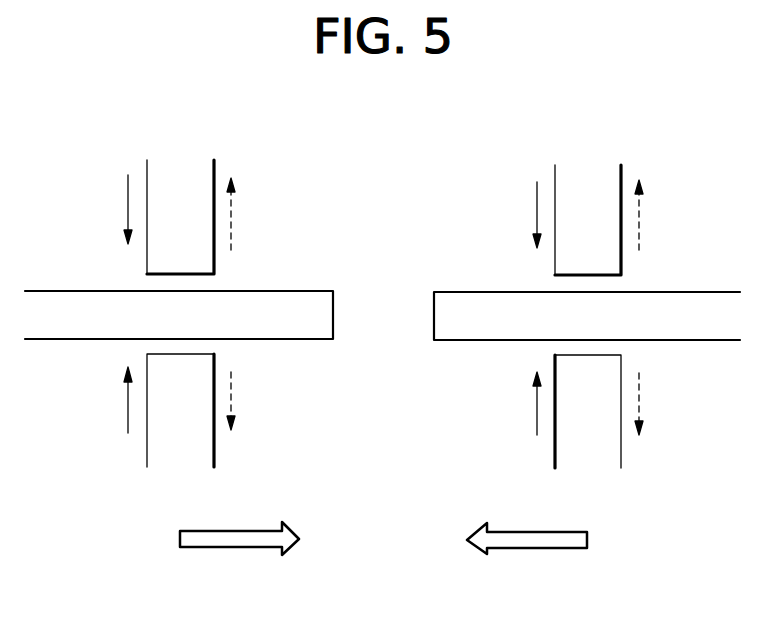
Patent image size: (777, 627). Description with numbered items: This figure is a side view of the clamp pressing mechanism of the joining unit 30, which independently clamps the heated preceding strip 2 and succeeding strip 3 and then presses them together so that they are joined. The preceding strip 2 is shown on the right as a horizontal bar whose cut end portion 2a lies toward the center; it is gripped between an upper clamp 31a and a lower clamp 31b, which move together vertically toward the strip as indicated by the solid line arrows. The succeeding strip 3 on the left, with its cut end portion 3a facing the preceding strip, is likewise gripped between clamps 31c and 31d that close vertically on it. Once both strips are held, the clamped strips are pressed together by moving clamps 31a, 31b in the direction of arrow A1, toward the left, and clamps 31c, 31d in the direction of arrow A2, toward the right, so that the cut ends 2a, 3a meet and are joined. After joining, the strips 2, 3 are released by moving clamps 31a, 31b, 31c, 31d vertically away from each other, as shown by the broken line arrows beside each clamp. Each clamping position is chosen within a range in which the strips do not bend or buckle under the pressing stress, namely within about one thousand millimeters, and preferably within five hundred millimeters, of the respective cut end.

The preceding strip 2 is at (682, 292).
The end portion of second substrate 2a is at (477, 348).
The succeeding strip 3 is at (95, 291).
The end portion of first substrate 3a is at (333, 347).
The joining unit 30 is at (600, 157).
The clamp 31a is at (555, 263).
The clamp 31b is at (555, 452).
The clamp 31c is at (214, 257).
The clamp 31d is at (214, 447).
The arrow A1 is at (522, 548).
The arrow A2 is at (235, 547).